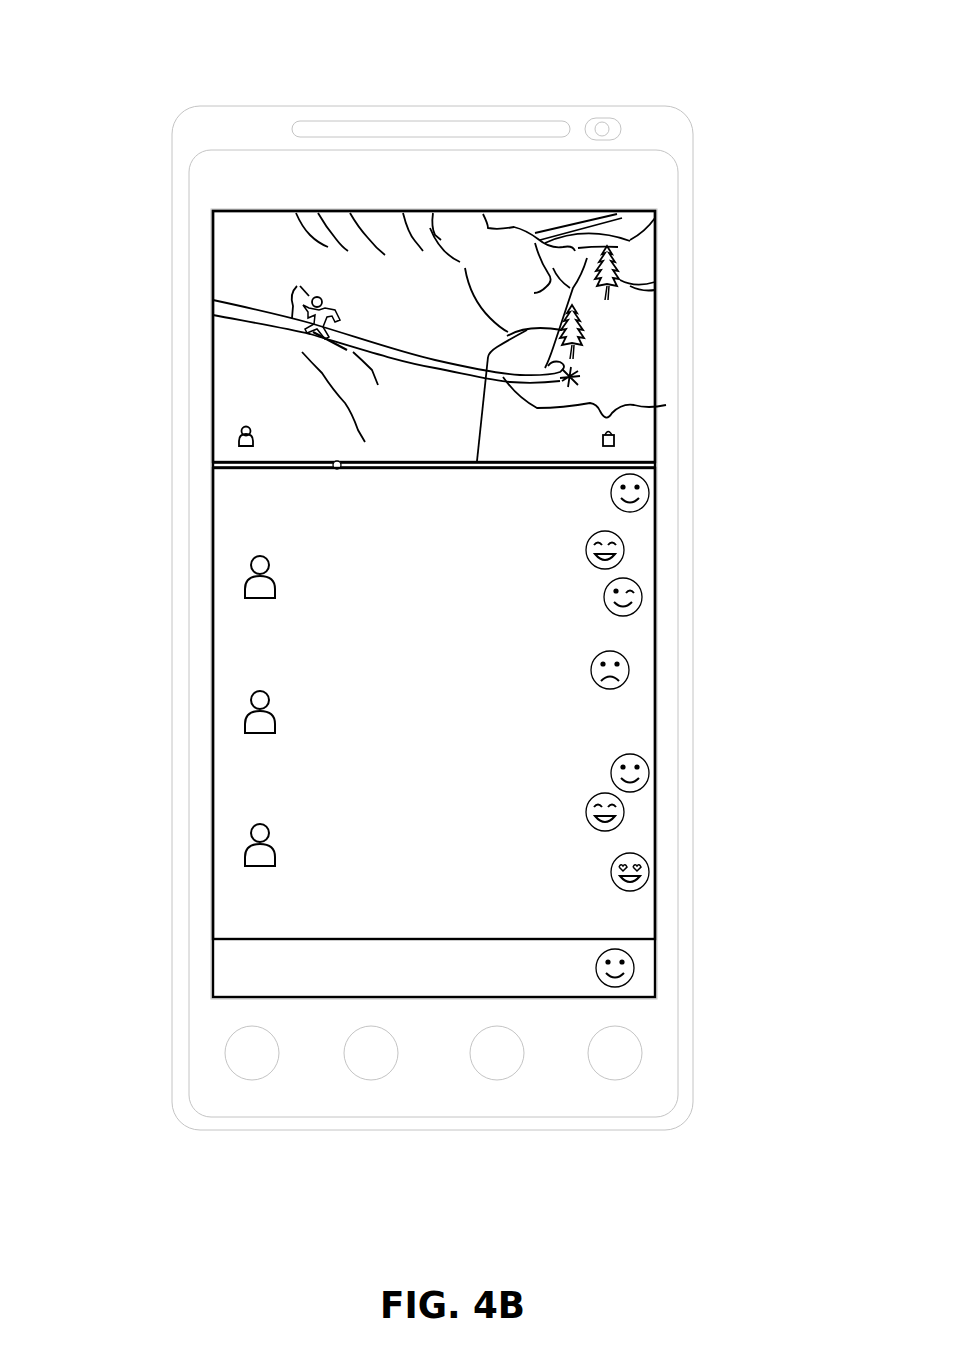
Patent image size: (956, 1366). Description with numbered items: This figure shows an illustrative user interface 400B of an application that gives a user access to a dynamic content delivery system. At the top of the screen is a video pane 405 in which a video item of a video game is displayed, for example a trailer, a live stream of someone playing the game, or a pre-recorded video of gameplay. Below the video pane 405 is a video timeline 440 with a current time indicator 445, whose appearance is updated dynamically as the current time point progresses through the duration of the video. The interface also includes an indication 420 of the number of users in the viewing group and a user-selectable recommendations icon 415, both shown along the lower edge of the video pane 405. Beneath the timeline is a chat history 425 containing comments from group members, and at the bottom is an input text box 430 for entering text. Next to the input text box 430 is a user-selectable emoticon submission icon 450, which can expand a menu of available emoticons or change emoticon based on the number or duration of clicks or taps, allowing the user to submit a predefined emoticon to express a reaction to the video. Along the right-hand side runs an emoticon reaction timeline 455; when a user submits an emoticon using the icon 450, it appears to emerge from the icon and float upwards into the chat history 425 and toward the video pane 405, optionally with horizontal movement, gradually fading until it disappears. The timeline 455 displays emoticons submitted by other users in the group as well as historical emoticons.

The user interface 400B is at (186, 44).
The video pane 405 is at (643, 287).
The user-selectable recommendations icon 415 is at (654, 442).
The indication of the number of users in the group 420 is at (224, 431).
The chat history 425 is at (218, 724).
The input text box 430 is at (210, 956).
The video timeline 440 is at (231, 469).
The current time indicator 445 is at (333, 468).
The user-selectable emoticon submission icon 450 is at (634, 968).
The emoticon reaction timeline 455 is at (642, 552).